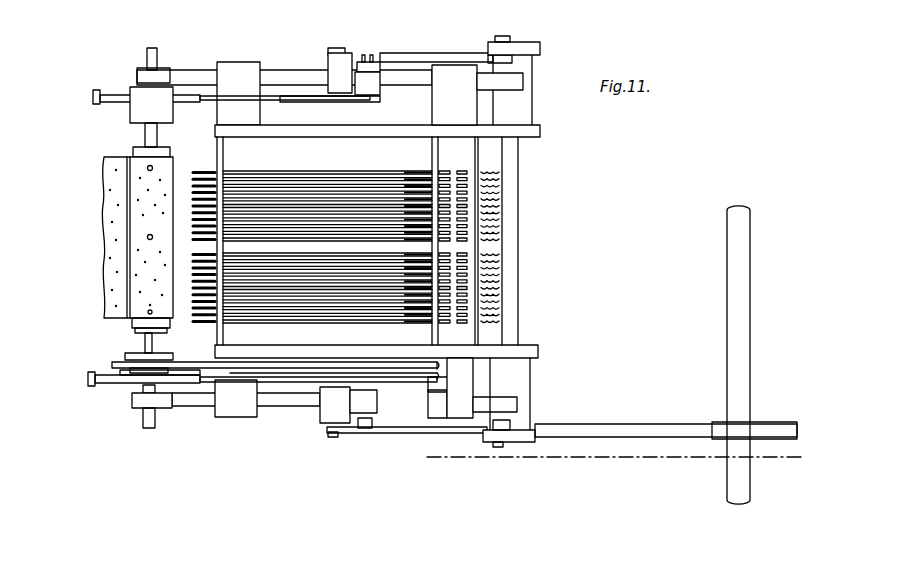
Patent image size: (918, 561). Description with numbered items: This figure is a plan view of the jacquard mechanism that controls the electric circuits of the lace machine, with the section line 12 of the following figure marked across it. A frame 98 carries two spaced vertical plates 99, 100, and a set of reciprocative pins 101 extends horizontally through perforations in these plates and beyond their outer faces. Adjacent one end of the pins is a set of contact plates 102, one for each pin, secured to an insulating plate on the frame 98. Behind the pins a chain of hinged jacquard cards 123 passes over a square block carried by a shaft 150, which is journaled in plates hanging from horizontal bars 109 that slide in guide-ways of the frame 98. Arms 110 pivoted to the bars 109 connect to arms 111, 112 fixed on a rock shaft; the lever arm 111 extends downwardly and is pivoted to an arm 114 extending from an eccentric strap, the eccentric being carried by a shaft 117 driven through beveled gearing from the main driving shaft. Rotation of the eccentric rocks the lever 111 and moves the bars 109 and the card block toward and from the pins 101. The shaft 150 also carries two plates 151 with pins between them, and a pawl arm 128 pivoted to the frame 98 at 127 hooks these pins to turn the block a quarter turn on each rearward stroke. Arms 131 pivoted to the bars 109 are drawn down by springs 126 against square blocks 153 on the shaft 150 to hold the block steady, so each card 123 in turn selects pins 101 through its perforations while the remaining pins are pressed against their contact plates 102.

The section line 12 is at (437, 410).
The frame 98 is at (543, 132).
The vertical plate 99 is at (223, 327).
The vertical plate 100 is at (433, 330).
The reciprocative pins 101 is at (305, 222).
The contact plates 102 is at (456, 180).
The horizontal bars 109 is at (288, 78).
The arms 110 is at (390, 434).
The lever arm 111 is at (518, 443).
The arm 112 is at (521, 43).
The arm 114 is at (623, 438).
The shaft 117 is at (733, 489).
The jacquard cards 123 is at (104, 283).
The spring 126 is at (97, 90).
The pivot 127 is at (448, 380).
The pawl arm 128 is at (333, 371).
The arms 131 is at (231, 98).
The shaft 150 is at (143, 340).
The plates 151 is at (160, 360).
The square block 153 is at (132, 387).